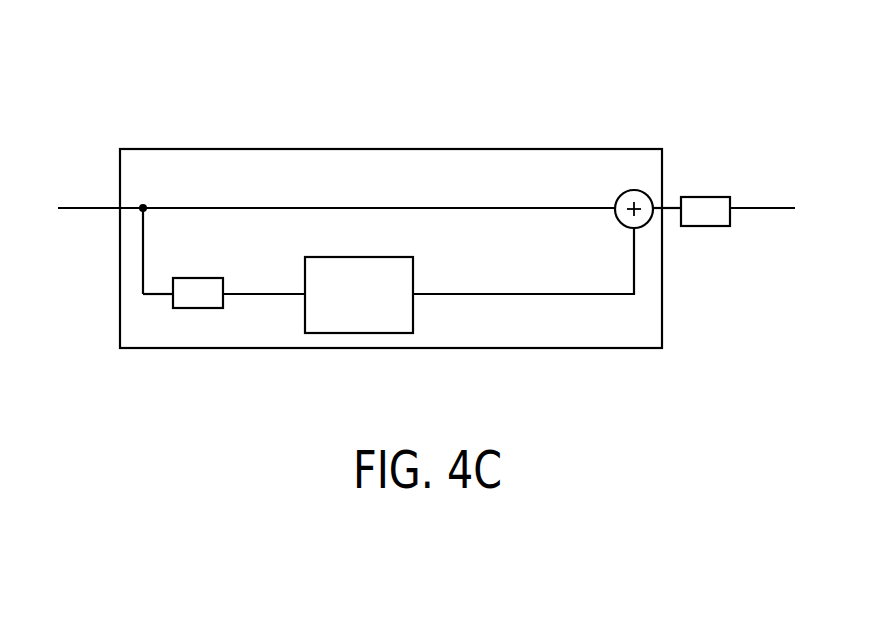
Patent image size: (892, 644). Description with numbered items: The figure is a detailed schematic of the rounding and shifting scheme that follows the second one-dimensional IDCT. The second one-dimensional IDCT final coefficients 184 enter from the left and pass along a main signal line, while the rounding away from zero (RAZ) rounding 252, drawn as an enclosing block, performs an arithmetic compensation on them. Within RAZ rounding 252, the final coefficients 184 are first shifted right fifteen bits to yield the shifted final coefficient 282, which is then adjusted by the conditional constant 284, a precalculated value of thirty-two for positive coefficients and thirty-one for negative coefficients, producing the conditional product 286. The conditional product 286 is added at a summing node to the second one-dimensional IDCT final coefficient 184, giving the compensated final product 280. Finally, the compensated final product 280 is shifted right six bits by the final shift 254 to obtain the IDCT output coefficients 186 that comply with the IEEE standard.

The second 1D IDCT final coefficients 184 is at (82, 207).
The rounding away from zero (RAZ) rounding 252 is at (226, 148).
The compensated final product 280 is at (672, 207).
The IDCT output coefficients 186 is at (764, 207).
The final shift 254 is at (704, 227).
The shifted final coefficient 282 is at (262, 295).
The conditional constant 284 is at (353, 333).
The conditional product 286 is at (564, 297).